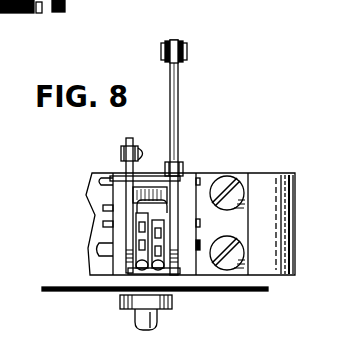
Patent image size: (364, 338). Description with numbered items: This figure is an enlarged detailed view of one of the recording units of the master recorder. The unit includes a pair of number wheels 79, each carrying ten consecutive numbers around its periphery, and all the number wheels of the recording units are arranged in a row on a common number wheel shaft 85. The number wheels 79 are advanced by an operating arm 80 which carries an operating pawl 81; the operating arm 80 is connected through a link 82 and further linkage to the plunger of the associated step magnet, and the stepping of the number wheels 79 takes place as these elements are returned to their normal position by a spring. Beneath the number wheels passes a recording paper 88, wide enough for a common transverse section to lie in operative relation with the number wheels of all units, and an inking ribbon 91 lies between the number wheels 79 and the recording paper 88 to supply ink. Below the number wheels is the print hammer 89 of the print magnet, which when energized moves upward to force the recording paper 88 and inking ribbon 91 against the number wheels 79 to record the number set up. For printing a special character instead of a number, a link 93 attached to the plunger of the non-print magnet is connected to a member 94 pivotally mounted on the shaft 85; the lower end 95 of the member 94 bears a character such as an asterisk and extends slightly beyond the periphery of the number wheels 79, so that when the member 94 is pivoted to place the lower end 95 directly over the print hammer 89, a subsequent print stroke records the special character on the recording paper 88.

The number wheels 79 is at (196, 238).
The operating arm 80 is at (178, 127).
The operating pawl 81 is at (176, 233).
The link 82 is at (170, 45).
The number wheel shaft 85 is at (99, 249).
The recording paper 88 is at (85, 292).
The print hammer 89 is at (172, 305).
The inking ribbon 91 is at (232, 291).
The link 93 is at (131, 142).
The member 94 is at (127, 204).
The lower end 95 is at (128, 279).